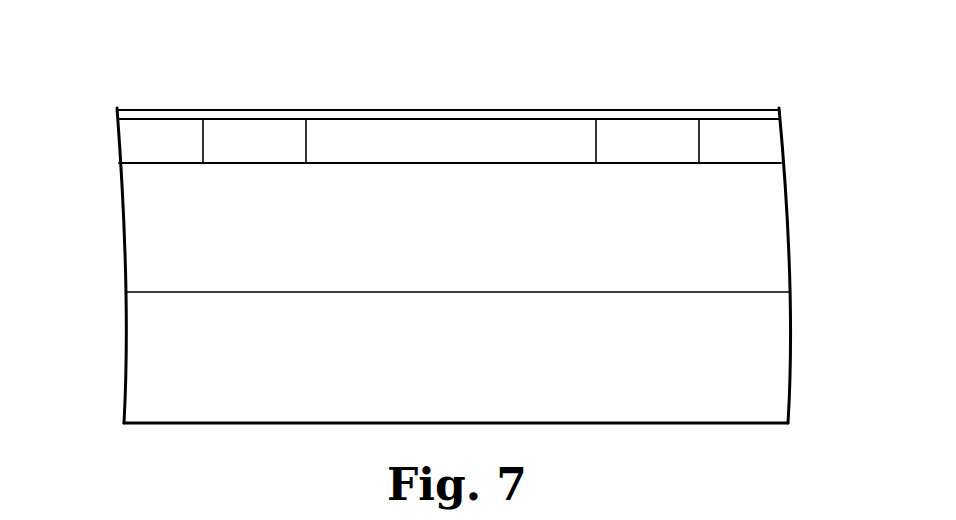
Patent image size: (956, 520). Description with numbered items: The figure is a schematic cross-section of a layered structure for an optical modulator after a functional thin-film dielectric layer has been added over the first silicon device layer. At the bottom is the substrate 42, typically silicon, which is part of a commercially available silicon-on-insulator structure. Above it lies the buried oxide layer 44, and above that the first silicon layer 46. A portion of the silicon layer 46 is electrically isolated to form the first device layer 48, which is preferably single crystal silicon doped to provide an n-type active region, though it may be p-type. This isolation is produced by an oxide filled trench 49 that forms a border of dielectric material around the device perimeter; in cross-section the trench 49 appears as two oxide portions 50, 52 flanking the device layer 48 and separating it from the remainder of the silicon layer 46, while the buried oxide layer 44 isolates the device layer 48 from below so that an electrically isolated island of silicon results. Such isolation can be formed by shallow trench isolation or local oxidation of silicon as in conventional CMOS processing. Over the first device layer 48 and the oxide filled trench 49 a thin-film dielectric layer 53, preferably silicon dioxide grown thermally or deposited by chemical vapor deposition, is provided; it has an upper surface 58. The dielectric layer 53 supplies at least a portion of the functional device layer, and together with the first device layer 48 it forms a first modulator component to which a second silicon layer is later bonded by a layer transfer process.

The substrate 42 is at (682, 367).
The buried oxide layer 44 is at (142, 210).
The first silicon layer 46 is at (128, 141).
The first device layer 48 is at (527, 135).
The oxide filled trench 49 is at (272, 140).
The oxide portion 50 is at (232, 137).
The oxide portion 52 is at (655, 132).
The thin-film dielectric layer 53 is at (443, 112).
The surface 58 is at (156, 110).